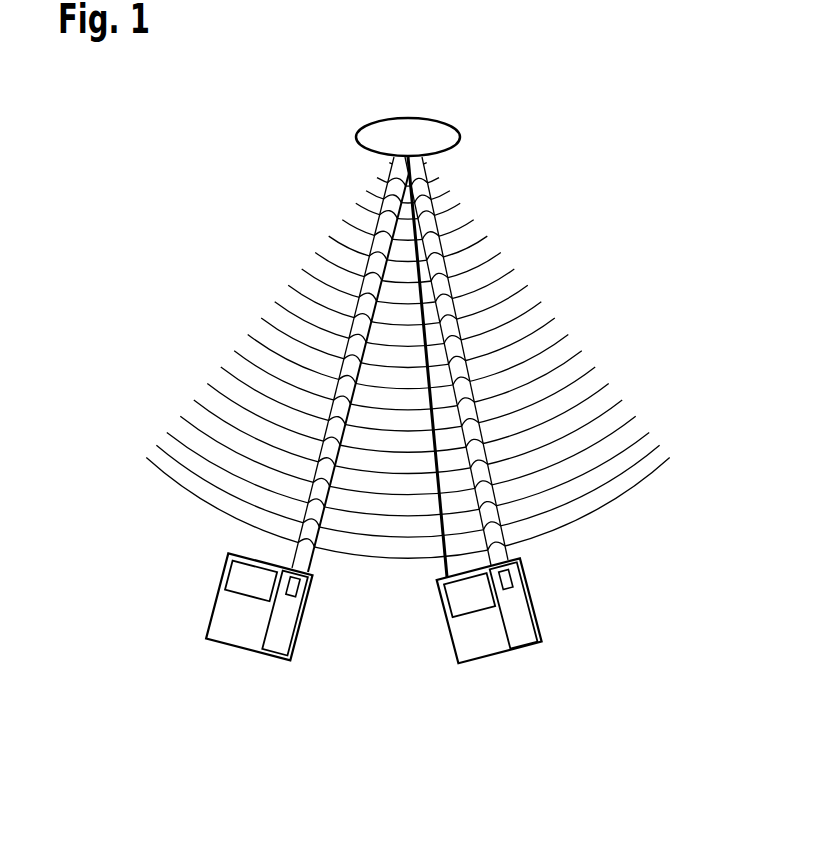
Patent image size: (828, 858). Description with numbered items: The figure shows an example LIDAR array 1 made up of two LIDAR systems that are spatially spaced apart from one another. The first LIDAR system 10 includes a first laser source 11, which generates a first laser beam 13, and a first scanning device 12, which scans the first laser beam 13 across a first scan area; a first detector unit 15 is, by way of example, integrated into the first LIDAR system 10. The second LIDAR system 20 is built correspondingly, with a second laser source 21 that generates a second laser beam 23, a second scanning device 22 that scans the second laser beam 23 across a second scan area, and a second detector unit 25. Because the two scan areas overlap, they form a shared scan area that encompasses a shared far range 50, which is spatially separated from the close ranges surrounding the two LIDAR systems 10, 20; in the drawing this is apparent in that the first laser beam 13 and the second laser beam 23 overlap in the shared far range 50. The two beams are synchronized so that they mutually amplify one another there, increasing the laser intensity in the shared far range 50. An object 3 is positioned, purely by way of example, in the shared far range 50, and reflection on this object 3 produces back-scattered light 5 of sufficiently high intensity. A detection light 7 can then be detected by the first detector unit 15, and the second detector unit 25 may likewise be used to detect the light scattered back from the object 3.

The LIDAR array 1 is at (625, 93).
The object 3 is at (460, 136).
The back-scattered light 5 is at (530, 300).
The detection light 7 is at (442, 413).
The shared far range 50 is at (423, 158).
The first LIDAR system 10 is at (487, 647).
The first laser source 11 is at (512, 578).
The first scanning device 12 is at (517, 608).
The first laser beam 13 is at (498, 535).
The first detector unit 15 is at (465, 602).
The second LIDAR system 20 is at (232, 615).
The second laser source 21 is at (293, 590).
The second scanning device 22 is at (287, 618).
The second laser beam 23 is at (300, 558).
The second detector unit 25 is at (247, 578).